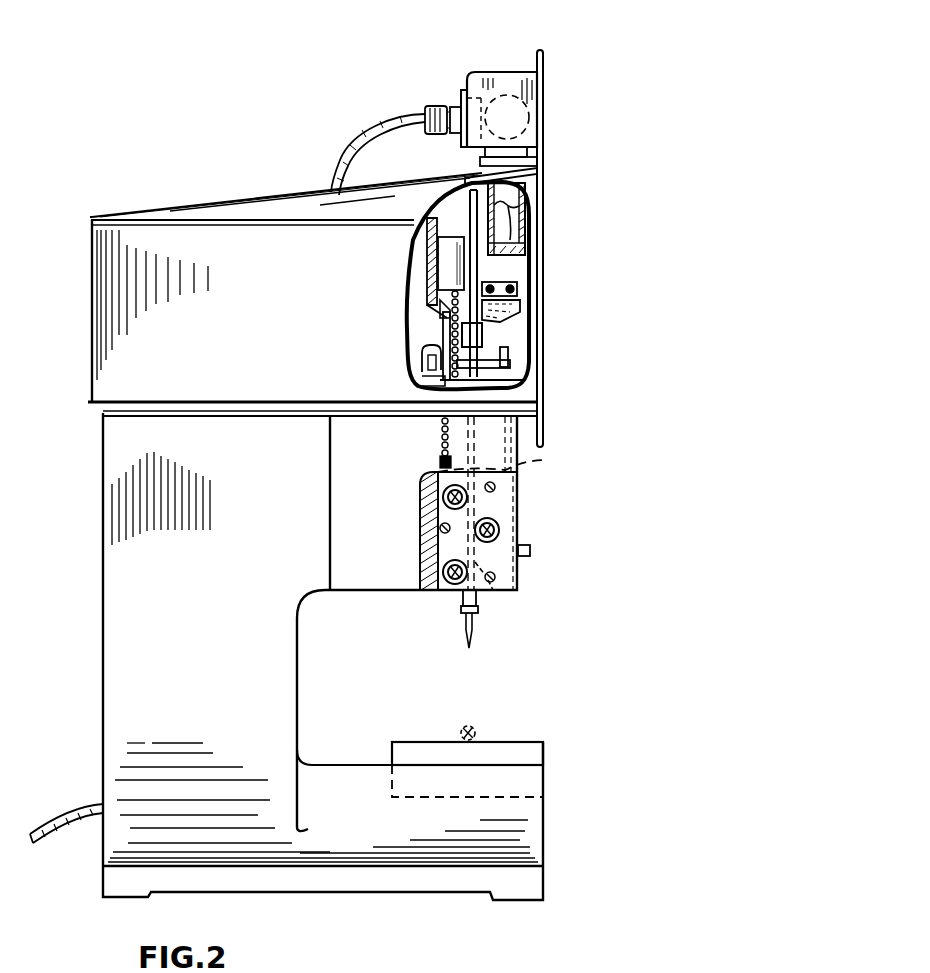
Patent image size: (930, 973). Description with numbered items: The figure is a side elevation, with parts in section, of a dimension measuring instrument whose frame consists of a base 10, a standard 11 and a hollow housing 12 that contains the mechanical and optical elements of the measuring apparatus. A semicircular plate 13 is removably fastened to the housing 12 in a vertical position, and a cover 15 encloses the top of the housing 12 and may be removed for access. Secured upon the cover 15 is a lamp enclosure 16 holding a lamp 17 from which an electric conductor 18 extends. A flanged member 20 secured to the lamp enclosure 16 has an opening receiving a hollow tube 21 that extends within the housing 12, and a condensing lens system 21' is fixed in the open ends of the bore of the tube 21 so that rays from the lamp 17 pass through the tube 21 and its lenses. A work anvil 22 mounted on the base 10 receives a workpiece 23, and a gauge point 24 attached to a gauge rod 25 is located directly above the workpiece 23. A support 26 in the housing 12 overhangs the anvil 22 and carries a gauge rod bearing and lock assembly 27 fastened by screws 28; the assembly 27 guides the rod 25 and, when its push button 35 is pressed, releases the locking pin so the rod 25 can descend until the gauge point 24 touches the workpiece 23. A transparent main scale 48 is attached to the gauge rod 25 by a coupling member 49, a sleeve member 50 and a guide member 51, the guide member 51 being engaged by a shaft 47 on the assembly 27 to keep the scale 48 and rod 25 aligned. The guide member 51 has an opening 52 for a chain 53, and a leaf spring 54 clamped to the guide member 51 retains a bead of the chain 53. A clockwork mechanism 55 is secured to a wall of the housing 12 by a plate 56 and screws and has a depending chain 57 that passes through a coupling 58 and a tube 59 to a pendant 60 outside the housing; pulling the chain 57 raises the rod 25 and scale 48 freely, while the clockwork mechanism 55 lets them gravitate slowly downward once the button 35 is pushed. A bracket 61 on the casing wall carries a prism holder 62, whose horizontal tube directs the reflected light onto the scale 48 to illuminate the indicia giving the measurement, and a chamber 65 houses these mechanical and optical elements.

The base 10 is at (535, 826).
The standard 11 is at (280, 693).
The hollow housing 12 is at (54, 382).
The semicircular plate 13 is at (544, 72).
The cover 15 is at (243, 214).
The lamp enclosure 16 is at (513, 80).
The lamp 17 is at (478, 84).
The electric conductor 18 is at (389, 118).
The flanged member 20 is at (482, 176).
The hollow tube 21 is at (551, 218).
The condensing lens system 21' is at (573, 218).
The work anvil 22 is at (514, 752).
The workpiece 23 is at (474, 726).
The gauge point 24 is at (474, 620).
The gauge rod 25 is at (503, 610).
The support 26 is at (400, 547).
The gauge rod bearing and lock assembly 27 is at (500, 509).
The screws 28 is at (496, 488).
The push button 35 is at (531, 550).
The shaft 47 is at (509, 355).
The transparent main scale 48 is at (479, 268).
The coupling member 49 is at (483, 342).
The sleeve member 50 is at (520, 386).
The guide member 51 is at (512, 368).
The opening 52 is at (424, 386).
The chain 53 is at (446, 334).
The leaf spring 54 is at (424, 357).
The clockwork mechanism 55 is at (447, 272).
The plate 56 is at (426, 247).
The chain 57 is at (438, 310).
The coupling 58 is at (442, 322).
The tube 59 is at (427, 402).
The pendant 60 is at (439, 462).
The bracket 61 is at (512, 298).
The prism holder 62 is at (520, 306).
The chamber 65 is at (516, 266).